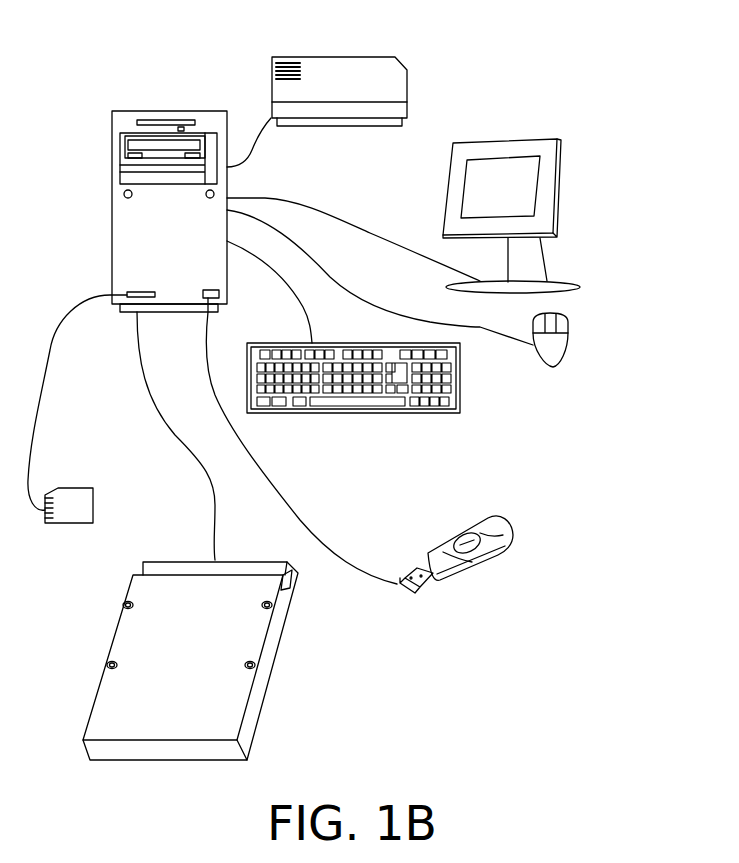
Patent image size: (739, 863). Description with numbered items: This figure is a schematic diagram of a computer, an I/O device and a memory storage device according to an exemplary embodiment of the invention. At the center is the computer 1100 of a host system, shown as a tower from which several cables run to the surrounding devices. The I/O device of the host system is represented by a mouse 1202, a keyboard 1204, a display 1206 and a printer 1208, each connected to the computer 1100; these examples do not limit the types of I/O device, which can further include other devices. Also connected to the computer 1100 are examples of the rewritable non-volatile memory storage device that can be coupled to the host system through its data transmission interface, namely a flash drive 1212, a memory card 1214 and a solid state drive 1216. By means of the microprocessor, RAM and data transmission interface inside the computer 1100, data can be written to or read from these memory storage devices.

The computer 1100 is at (172, 111).
The printer 1208 is at (333, 57).
The display 1206 is at (512, 140).
The mouse 1202 is at (568, 345).
The keyboard 1204 is at (460, 390).
The memory card 1214 is at (93, 497).
The solid state drive (SSD) 1216 is at (247, 545).
The flash drive 1212 is at (448, 538).